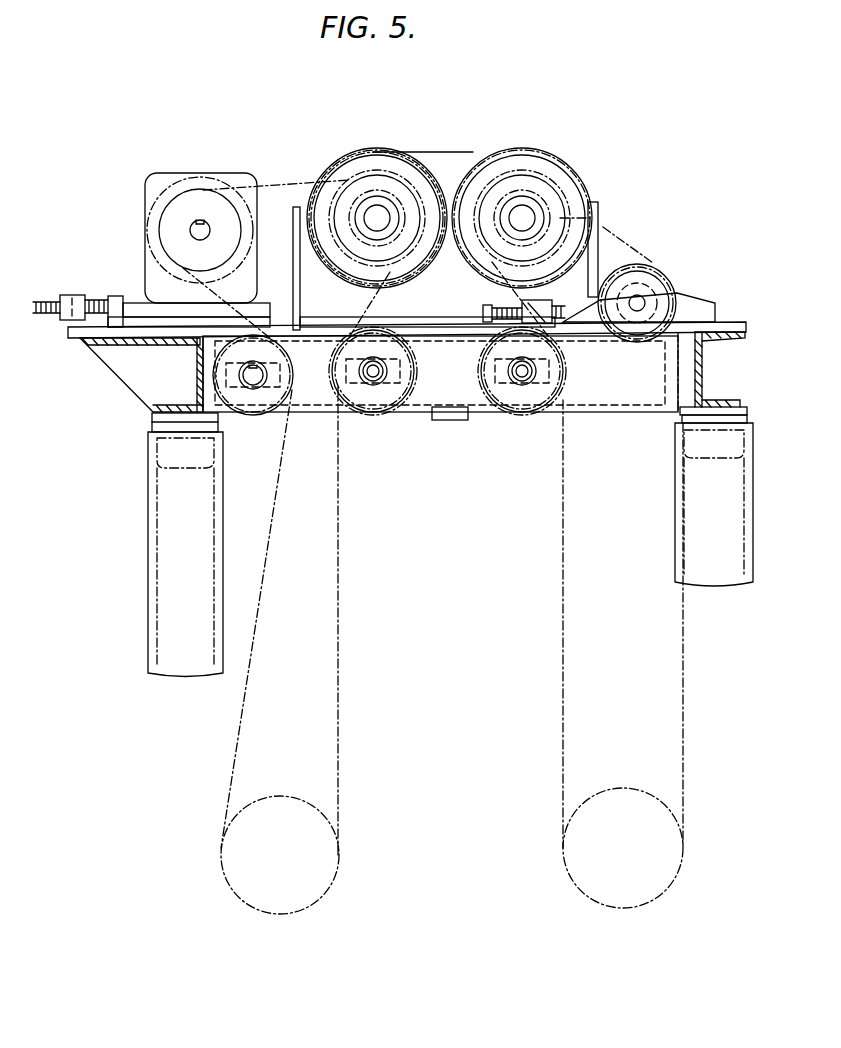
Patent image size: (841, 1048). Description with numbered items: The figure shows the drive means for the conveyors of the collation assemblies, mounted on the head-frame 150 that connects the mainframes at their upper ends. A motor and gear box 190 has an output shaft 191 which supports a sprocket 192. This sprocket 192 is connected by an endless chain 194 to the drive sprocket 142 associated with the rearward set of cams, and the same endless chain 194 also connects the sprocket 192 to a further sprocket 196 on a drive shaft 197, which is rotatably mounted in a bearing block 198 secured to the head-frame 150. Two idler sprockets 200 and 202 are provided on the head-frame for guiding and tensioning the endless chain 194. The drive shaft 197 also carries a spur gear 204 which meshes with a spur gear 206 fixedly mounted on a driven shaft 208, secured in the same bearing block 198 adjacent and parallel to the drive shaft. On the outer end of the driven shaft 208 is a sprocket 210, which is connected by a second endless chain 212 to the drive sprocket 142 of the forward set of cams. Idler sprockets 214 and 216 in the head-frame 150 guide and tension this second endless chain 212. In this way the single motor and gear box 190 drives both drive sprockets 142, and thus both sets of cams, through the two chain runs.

The drive sprocket 142 is at (225, 843).
The head-frame 150 is at (698, 368).
The motor and gear box 190 is at (171, 118).
The output shaft 191 is at (195, 230).
The sprocket 192 is at (173, 212).
The endless chain 194 is at (240, 710).
The further sprocket 196 is at (352, 200).
The drive shaft 197 is at (377, 210).
The bearing block 198 is at (445, 157).
The idler sprocket 200 is at (215, 370).
The idler sprocket 202 is at (377, 397).
The spur gear 204 is at (335, 147).
The spur gear 206 is at (505, 147).
The driven shaft 208 is at (522, 212).
The sprocket 210 is at (600, 215).
The endless chain 212 is at (683, 640).
The idler sprocket 214 is at (647, 278).
The idler sprocket 216 is at (537, 393).